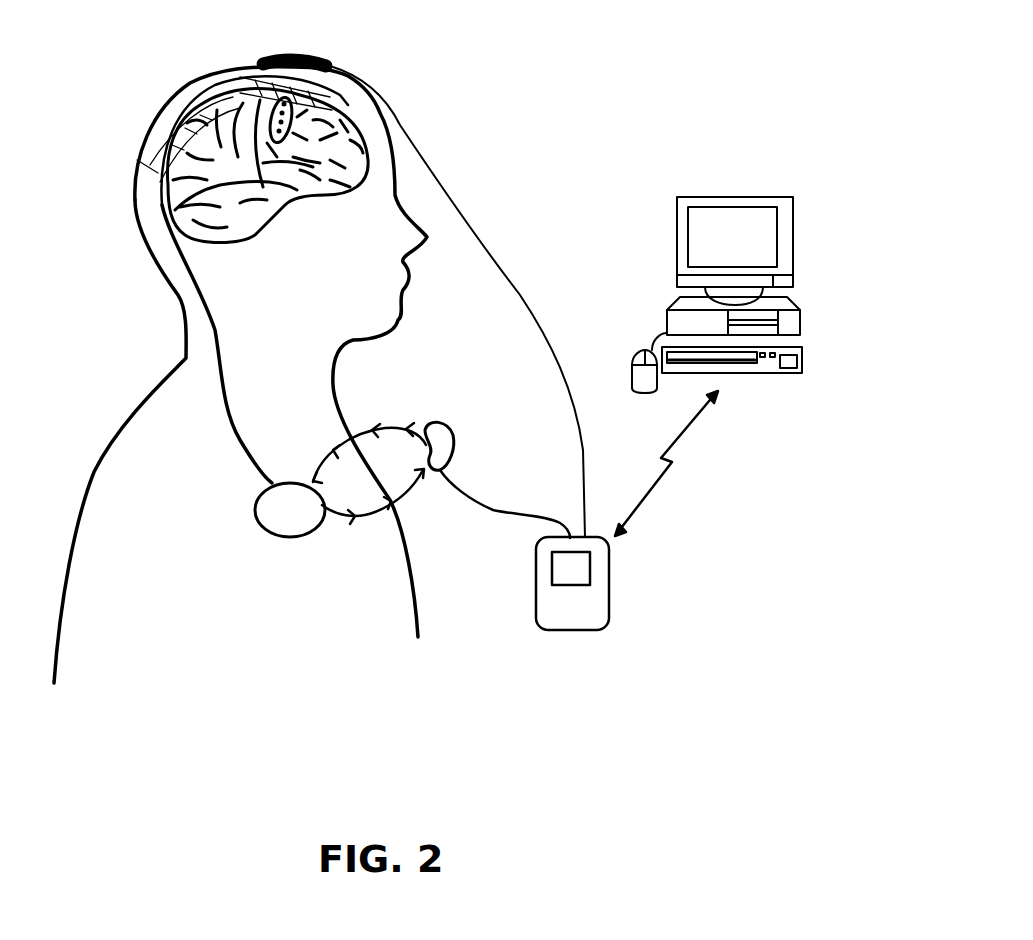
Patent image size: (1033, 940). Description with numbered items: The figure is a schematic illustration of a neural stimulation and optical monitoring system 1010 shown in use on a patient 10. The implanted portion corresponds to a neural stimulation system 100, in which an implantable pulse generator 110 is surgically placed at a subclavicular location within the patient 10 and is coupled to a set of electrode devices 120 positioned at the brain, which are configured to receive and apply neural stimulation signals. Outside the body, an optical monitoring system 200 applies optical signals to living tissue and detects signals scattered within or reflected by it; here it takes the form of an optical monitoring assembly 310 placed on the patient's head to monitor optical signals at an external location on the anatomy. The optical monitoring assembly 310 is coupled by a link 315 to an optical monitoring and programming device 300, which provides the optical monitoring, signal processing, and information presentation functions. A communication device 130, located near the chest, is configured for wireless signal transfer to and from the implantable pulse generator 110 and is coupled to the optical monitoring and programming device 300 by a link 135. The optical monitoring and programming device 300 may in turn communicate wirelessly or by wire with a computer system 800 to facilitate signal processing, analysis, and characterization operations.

The patient 10 is at (424, 272).
The neural stimulation system 100 is at (176, 324).
The implantable pulse generator 110 is at (290, 510).
The electrode devices 120 is at (267, 92).
The communication device 130 is at (460, 453).
The link 135 is at (507, 508).
The optical monitoring system 200 is at (524, 40).
The optical monitoring and programming device 300 is at (611, 573).
The optical monitoring assembly 310 is at (277, 52).
The link 315 is at (514, 281).
The computer system 800 is at (812, 207).
The neural stimulation and optical monitoring system 1010 is at (503, 704).